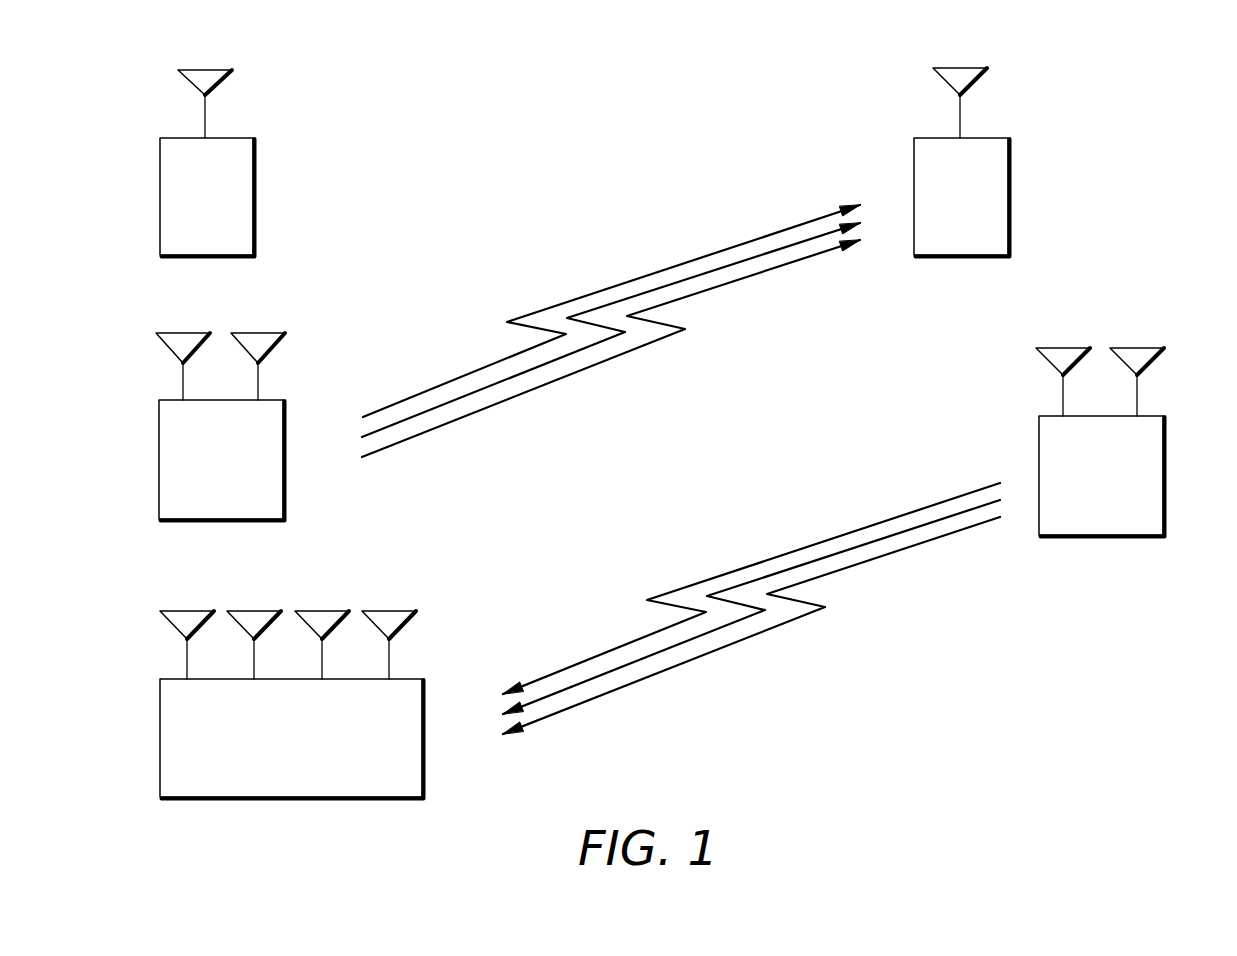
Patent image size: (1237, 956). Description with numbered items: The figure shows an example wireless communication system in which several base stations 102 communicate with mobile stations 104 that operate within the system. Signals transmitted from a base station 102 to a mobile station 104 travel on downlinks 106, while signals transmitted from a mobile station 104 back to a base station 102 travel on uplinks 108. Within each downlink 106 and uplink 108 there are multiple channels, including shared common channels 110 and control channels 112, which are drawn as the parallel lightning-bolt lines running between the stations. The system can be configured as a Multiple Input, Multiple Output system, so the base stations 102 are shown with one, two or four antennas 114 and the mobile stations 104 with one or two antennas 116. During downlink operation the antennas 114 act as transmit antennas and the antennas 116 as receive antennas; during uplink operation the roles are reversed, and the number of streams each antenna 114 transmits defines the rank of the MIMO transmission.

The base station 102 is at (253, 190).
The mobile station 104 is at (1008, 190).
The downlink 106 is at (775, 268).
The uplink 108 is at (915, 547).
The shared common channel 110 is at (608, 287).
The control channel 112 is at (565, 355).
The base station antenna 114 is at (205, 108).
The mobile station antenna 116 is at (960, 108).